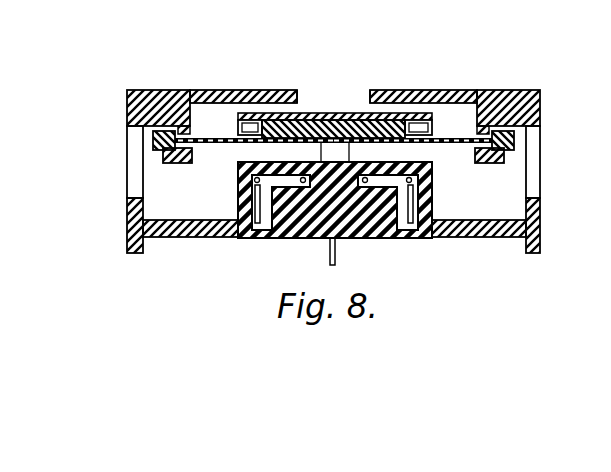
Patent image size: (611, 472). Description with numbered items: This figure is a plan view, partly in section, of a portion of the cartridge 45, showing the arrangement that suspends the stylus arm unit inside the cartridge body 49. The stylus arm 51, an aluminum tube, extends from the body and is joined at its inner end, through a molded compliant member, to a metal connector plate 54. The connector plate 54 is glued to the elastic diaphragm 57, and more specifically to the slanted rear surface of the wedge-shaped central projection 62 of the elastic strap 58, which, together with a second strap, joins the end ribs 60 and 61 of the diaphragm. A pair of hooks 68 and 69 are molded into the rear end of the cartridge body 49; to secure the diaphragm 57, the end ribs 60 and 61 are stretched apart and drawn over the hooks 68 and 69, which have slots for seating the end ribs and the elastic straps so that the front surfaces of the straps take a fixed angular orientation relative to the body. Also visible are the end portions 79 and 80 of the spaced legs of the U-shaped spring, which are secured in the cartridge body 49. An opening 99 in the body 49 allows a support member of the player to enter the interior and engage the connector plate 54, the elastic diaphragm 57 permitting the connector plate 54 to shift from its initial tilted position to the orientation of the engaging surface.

The cartridge 45 is at (296, 141).
The cartridge body 49 is at (455, 90).
The opening 99 is at (328, 97).
The central projection 62 is at (311, 113).
The connector plate 54 is at (354, 113).
The end rib 60 is at (153, 143).
The end rib 61 is at (517, 144).
The hook 68 is at (171, 162).
The hook 69 is at (489, 162).
The elastic diaphragm 57 is at (219, 156).
The elastic strap 58 is at (446, 146).
The end portion 79 is at (259, 198).
The end portion 80 is at (410, 198).
The stylus arm 51 is at (330, 255).